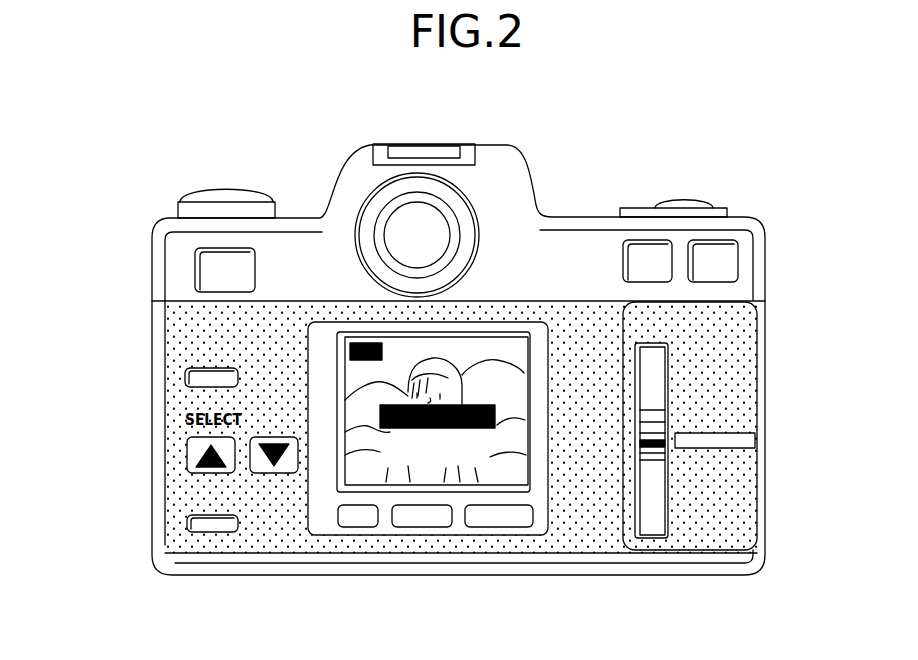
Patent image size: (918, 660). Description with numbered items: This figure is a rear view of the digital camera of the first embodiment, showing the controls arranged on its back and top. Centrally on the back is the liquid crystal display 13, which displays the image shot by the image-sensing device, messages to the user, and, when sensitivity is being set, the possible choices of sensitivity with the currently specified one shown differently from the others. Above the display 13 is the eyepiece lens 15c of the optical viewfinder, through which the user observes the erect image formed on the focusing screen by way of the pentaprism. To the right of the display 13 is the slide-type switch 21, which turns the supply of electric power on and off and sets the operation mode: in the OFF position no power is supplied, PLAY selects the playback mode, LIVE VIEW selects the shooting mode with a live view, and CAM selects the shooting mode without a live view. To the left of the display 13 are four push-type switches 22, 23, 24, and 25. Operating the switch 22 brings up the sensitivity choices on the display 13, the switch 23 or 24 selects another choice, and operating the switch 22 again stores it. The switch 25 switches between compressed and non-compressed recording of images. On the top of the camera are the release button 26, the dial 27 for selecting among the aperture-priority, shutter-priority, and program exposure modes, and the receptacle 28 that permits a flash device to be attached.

The liquid crystal display 13 is at (527, 467).
The eyepiece lens 15c is at (393, 223).
The slide-type switch 21 is at (658, 392).
The push-type switch 22 is at (188, 377).
The push-type switch 23 is at (190, 445).
The push-type switch 24 is at (262, 471).
The push-type switch 25 is at (218, 531).
The release button 26 is at (683, 198).
The dial 27 is at (222, 185).
The receptacle 28 is at (433, 150).